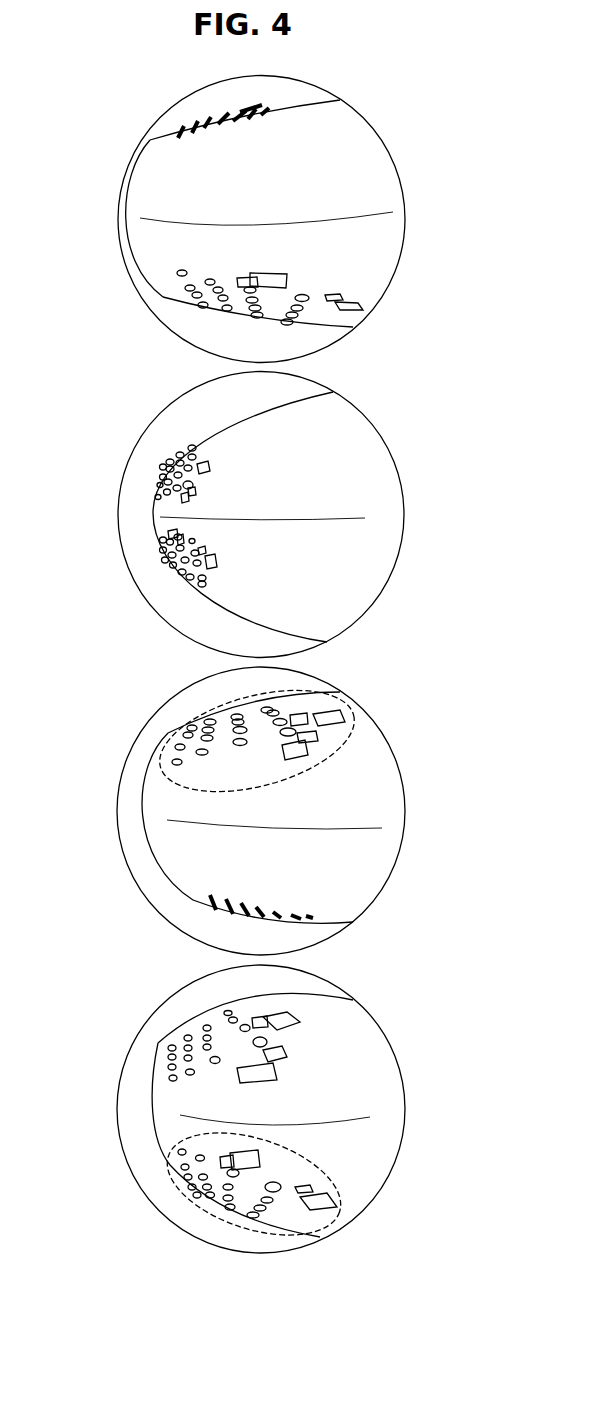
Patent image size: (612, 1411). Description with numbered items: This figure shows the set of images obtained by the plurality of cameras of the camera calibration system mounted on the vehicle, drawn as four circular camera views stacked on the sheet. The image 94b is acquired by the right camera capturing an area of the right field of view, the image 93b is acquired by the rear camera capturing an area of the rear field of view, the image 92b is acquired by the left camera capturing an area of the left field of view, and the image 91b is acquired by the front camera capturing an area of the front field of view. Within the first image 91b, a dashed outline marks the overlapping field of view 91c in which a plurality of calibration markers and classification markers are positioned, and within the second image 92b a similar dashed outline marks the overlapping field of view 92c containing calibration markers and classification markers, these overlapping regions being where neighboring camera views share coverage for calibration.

The image acquired by the right camera 94b is at (119, 212).
The image acquired by the rear camera 93b is at (119, 518).
The image acquired by the left camera 92b is at (119, 811).
The image acquired by the front camera 91b is at (119, 1107).
The overlapping field of view 92c is at (186, 719).
The overlapping field of view 91c is at (200, 1208).